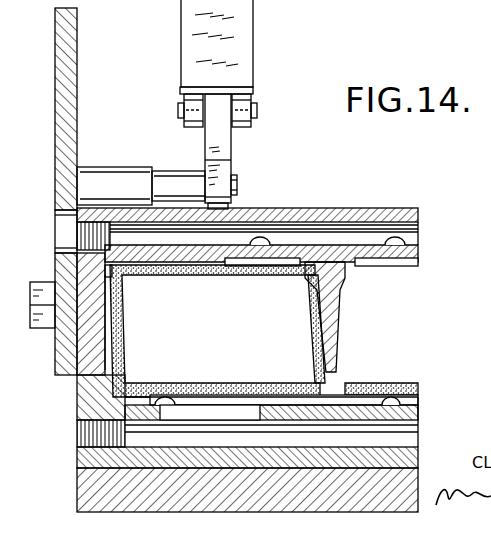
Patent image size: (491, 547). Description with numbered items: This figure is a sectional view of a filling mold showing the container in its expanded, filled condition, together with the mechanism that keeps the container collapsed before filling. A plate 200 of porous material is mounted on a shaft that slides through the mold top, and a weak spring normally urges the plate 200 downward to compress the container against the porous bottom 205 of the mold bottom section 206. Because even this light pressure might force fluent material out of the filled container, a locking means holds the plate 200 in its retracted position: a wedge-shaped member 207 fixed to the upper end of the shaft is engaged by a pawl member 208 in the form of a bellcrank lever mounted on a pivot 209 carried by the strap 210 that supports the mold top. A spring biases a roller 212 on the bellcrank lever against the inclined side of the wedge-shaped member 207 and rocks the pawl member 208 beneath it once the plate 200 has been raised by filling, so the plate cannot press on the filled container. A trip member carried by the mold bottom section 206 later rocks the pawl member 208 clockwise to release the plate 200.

The plate 200 is at (215, 272).
The porous bottom 205 is at (208, 392).
The mold bottom section 206 is at (84, 401).
The wedge-shaped member 207 is at (252, 51).
The pawl member 208 is at (232, 151).
The pivot 209 is at (238, 182).
The strap 210 is at (57, 105).
The roller 212 is at (190, 111).